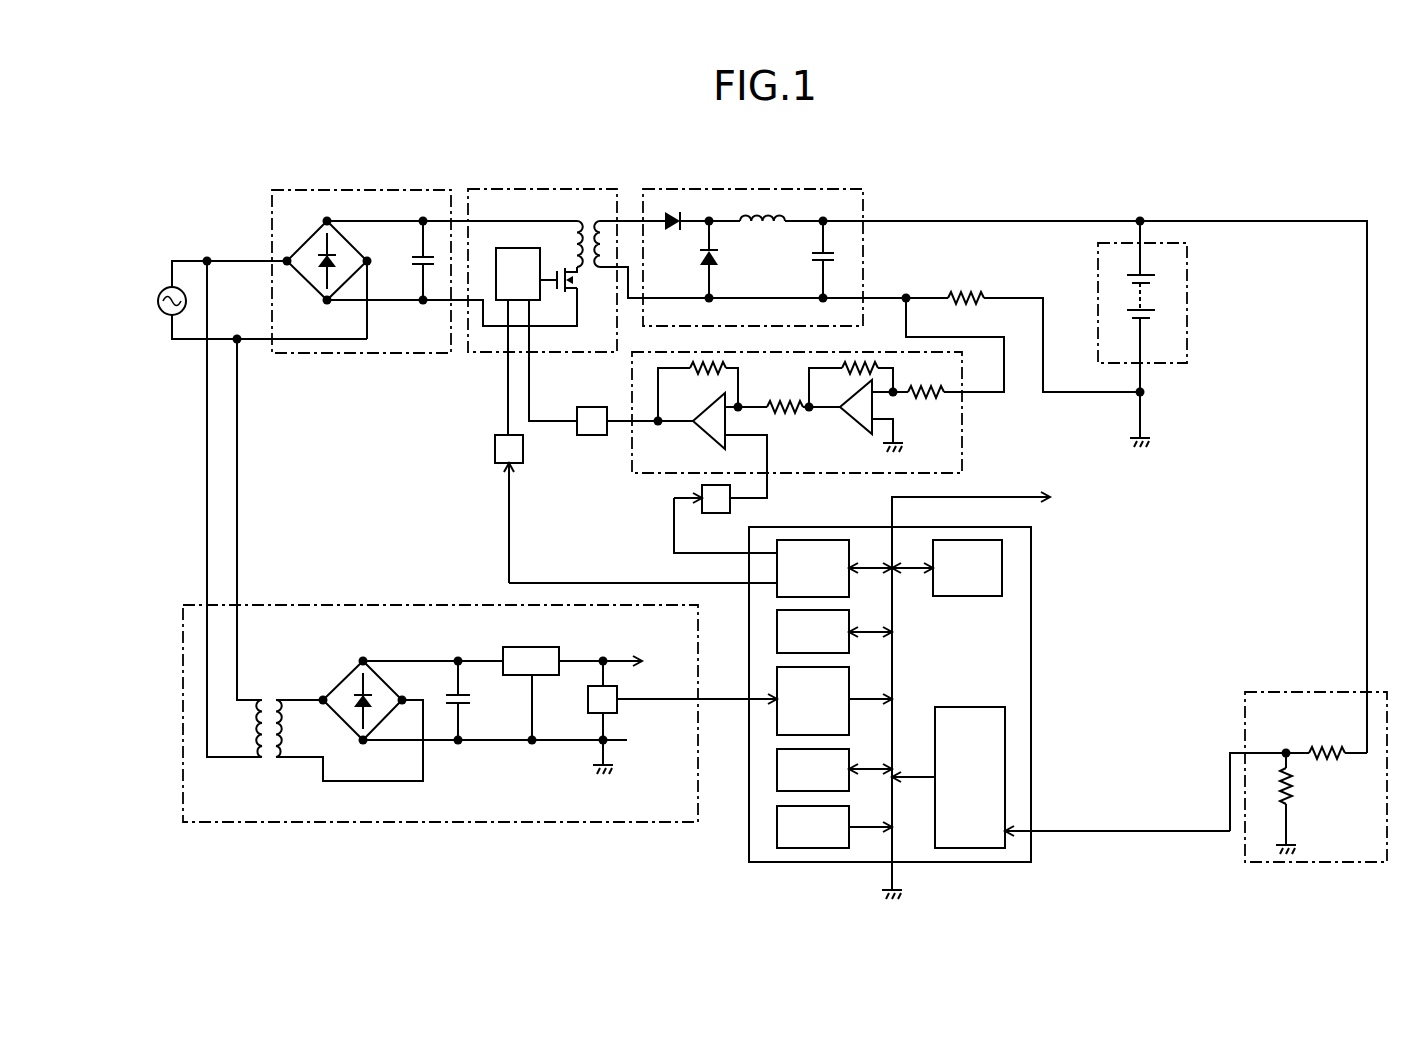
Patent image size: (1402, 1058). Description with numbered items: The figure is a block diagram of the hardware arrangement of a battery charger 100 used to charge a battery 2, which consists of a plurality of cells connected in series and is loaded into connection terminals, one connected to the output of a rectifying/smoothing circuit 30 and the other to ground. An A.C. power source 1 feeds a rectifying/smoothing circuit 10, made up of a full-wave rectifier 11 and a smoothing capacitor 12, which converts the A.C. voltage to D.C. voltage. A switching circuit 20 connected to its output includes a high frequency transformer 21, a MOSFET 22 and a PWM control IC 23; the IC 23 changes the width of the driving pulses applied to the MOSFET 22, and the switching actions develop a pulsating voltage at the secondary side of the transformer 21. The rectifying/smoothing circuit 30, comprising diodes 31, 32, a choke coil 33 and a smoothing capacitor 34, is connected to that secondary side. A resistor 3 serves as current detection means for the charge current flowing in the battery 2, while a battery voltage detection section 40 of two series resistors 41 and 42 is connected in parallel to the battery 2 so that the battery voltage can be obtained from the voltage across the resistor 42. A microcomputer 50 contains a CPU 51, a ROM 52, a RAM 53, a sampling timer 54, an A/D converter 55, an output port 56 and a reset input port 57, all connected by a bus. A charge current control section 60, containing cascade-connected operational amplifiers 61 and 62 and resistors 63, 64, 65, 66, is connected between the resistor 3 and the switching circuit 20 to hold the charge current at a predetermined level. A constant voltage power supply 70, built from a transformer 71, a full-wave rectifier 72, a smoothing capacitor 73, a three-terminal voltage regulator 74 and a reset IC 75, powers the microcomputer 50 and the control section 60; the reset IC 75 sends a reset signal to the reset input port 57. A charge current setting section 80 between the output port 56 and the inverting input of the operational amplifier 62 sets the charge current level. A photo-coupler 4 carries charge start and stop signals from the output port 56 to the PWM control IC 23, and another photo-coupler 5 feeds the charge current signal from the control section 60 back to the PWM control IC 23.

The A.C. power source 1 is at (162, 290).
The battery 2 is at (1187, 283).
The resistor 3 is at (968, 294).
The photo-coupler 4 is at (495, 447).
The photo-coupler 5 is at (590, 436).
The rectifying/smoothing circuit 10 is at (410, 190).
The full-wave rectifier 11 is at (311, 242).
The smoothing capacitor 12 is at (412, 259).
The switching circuit 20 is at (570, 189).
The high frequency transformer 21 is at (590, 220).
The MOSFET 22 is at (578, 281).
The PWM control IC 23 is at (524, 248).
The rectifying/smoothing circuit 30 is at (820, 189).
The diode 31 is at (672, 232).
The diode 32 is at (727, 256).
The choke coil 33 is at (766, 226).
The smoothing capacitor 34 is at (812, 256).
The battery voltage detection section 40 is at (1320, 690).
The resistor 41 is at (1328, 746).
The resistor 42 is at (1292, 790).
The microcomputer 50 is at (838, 527).
The CPU 51 is at (933, 590).
The ROM 52 is at (851, 816).
The RAM 53 is at (852, 758).
The sampling timer 54 is at (851, 615).
The A/D converter 55 is at (935, 745).
The output port 56 is at (850, 552).
The reset input port 57 is at (851, 680).
The charge current control section 60 is at (962, 434).
The operational amplifier 61 is at (860, 420).
The operational amplifier 62 is at (713, 436).
The resistor 63 is at (926, 398).
The resistor 64 is at (855, 377).
The resistor 65 is at (786, 397).
The resistor 66 is at (708, 373).
The constant voltage power supply 70 is at (320, 605).
The transformer 71 is at (268, 697).
The full-wave rectifier 72 is at (343, 682).
The smoothing capacitor 73 is at (473, 695).
The three-terminal voltage regulator 74 is at (545, 647).
The reset IC 75 is at (617, 705).
The charge current setting section 80 is at (722, 513).
The battery charger 100 is at (1183, 172).